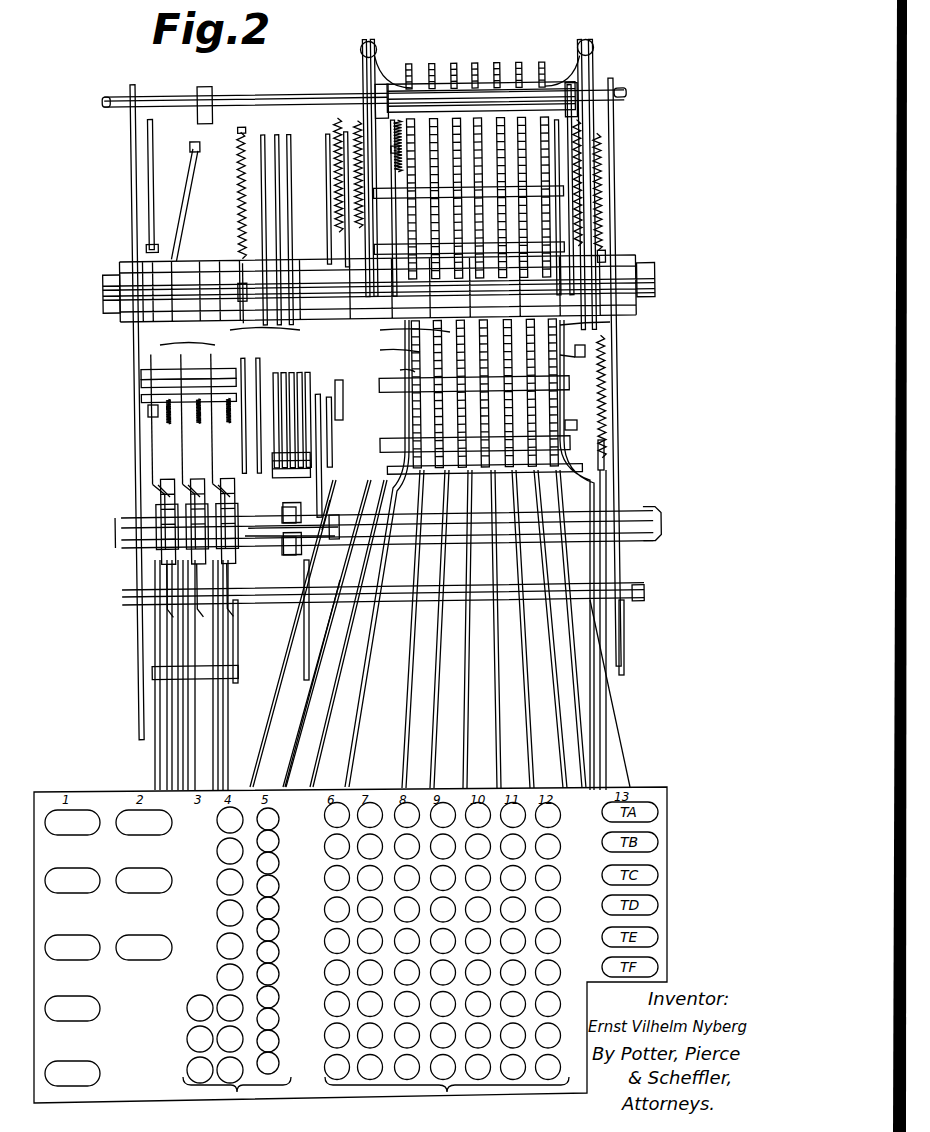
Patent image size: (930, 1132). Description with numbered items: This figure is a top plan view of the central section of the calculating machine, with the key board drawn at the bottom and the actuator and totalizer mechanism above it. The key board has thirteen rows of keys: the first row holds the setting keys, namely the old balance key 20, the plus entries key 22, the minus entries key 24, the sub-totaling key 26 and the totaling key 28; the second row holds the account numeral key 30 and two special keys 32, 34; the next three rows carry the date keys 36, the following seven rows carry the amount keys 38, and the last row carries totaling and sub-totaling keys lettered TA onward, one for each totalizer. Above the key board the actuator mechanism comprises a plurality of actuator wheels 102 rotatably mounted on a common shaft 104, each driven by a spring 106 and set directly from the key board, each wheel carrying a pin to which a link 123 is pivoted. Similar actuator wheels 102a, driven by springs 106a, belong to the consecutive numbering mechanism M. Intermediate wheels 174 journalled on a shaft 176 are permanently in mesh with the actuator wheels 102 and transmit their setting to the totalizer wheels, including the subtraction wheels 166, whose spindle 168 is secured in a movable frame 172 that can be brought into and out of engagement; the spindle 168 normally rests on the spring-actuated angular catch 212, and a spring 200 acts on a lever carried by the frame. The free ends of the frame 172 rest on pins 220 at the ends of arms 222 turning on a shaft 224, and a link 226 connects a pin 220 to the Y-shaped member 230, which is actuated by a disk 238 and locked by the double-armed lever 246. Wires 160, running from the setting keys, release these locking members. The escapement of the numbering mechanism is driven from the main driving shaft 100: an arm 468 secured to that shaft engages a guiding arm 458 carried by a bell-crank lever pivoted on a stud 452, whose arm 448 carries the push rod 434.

The driving shaft 100 is at (645, 520).
The actuator wheel 102 is at (338, 165).
The actuator wheel of the numbering counter 102a is at (270, 110).
The common shaft 104 is at (108, 275).
The spring 106 is at (358, 185).
The spring 106a is at (242, 190).
The link 123 is at (288, 678).
The wire 160 is at (165, 752).
The subtraction wheel 166 is at (577, 425).
The spindle 168 is at (400, 370).
The frame 172 is at (582, 467).
The intermediate wheel 174 is at (560, 360).
The shaft 176 is at (565, 400).
The spring 200 is at (604, 445).
The angular catch 212 is at (365, 420).
The pin 220 is at (380, 350).
The arm 222 is at (230, 330).
The shaft 224 is at (620, 280).
The link 226 is at (160, 345).
The Y-shaped member 230 is at (150, 405).
The disk 238 is at (215, 478).
The double-armed lever 246 is at (200, 378).
The push rod 434 is at (331, 513).
The arm of bell-crank lever 448 is at (300, 545).
The stud 452 is at (270, 550).
The guiding arm 458 is at (306, 615).
The arm 468 is at (282, 510).
The consecutive numbering mechanism M is at (243, 494).
The old balance key 20 is at (72, 822).
The plus entries key 22 is at (72, 880).
The minus entries key 24 is at (72, 947).
The sub-totaling key 26 is at (72, 1008).
The totaling key 28 is at (72, 1073).
The account numeral key 30 is at (144, 822).
The special key 32 is at (144, 880).
The special key 34 is at (144, 947).
The date keys 36 is at (221, 1088).
The amount keys 38 is at (431, 1088).